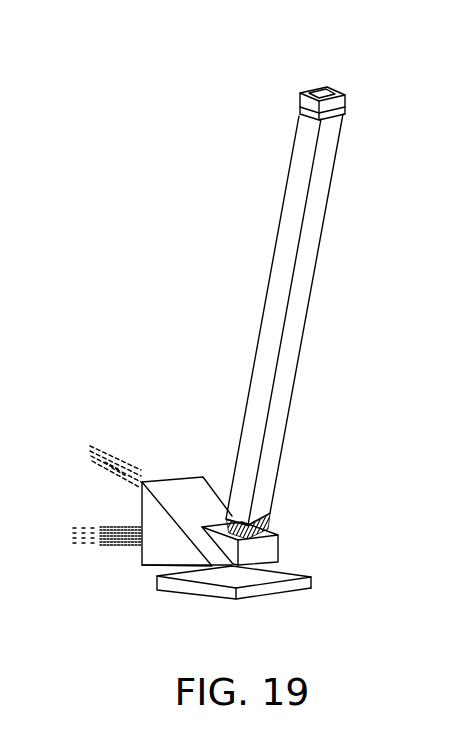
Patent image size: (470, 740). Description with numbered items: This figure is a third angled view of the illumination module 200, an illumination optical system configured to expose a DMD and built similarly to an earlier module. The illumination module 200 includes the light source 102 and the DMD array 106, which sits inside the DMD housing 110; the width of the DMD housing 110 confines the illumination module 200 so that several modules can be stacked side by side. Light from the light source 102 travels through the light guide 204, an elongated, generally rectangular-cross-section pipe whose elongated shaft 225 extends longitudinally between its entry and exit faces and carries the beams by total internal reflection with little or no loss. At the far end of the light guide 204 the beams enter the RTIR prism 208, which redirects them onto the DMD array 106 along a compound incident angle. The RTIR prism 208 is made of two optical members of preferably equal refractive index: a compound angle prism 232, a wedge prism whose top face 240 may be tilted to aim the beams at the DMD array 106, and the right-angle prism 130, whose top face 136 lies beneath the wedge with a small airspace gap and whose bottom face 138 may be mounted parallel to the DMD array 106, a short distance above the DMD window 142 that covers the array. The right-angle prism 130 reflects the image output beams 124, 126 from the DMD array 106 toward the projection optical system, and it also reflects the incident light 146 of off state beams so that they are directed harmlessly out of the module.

The illumination module 200 is at (372, 340).
The light source 102 is at (327, 88).
The light guide 204 is at (292, 173).
The elongated shaft 225 is at (326, 184).
The RTIR prism 208 is at (205, 448).
The top face 136 is at (188, 485).
The 45-45-90 degree prism 130 is at (142, 570).
The compound angle prism 232 is at (278, 544).
The top face 240 is at (272, 524).
The DMD housing 110 is at (313, 577).
The bottom face 138 is at (158, 577).
The DMD array 106 is at (268, 591).
The DMD window 142 is at (309, 584).
The incident light 146 is at (89, 446).
The image output beam 126 is at (103, 526).
The image output beam 124 is at (117, 549).